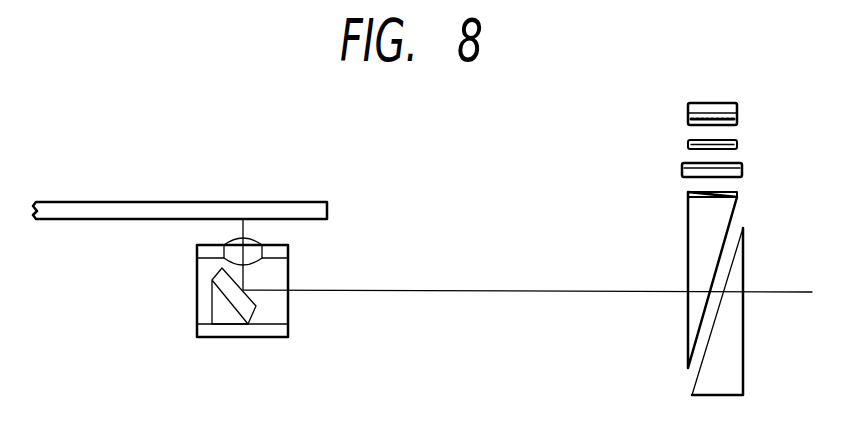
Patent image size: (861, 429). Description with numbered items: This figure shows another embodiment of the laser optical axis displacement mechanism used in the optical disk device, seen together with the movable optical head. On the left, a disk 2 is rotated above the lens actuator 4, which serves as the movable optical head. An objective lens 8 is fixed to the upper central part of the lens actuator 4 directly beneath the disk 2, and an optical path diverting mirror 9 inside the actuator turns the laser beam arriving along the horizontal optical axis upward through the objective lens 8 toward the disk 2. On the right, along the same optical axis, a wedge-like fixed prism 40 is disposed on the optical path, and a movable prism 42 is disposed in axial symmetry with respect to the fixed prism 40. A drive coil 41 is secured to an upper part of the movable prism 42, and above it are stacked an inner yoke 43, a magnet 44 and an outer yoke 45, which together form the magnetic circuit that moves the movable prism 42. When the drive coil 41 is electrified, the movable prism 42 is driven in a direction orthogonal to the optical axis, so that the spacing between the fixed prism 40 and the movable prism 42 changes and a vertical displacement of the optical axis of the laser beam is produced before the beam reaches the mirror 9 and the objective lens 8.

The disk 2 is at (245, 213).
The lens actuator 4 is at (277, 252).
The objective lens 8 is at (230, 243).
The optical path diverting mirror 9 is at (243, 302).
The fixed prism 40 is at (735, 338).
The drive coil 41 is at (696, 223).
The movable prism 42 is at (738, 146).
The inner yoke 43 is at (688, 168).
The magnet 44 is at (690, 118).
The outer yoke 45 is at (706, 108).